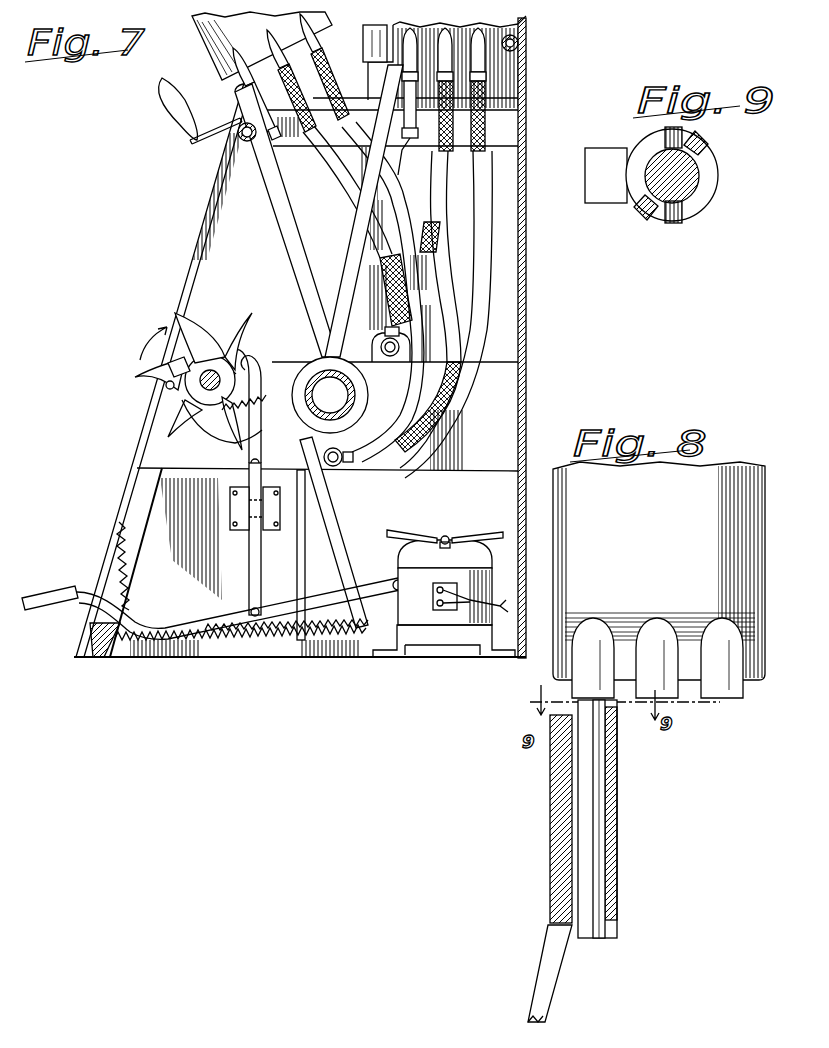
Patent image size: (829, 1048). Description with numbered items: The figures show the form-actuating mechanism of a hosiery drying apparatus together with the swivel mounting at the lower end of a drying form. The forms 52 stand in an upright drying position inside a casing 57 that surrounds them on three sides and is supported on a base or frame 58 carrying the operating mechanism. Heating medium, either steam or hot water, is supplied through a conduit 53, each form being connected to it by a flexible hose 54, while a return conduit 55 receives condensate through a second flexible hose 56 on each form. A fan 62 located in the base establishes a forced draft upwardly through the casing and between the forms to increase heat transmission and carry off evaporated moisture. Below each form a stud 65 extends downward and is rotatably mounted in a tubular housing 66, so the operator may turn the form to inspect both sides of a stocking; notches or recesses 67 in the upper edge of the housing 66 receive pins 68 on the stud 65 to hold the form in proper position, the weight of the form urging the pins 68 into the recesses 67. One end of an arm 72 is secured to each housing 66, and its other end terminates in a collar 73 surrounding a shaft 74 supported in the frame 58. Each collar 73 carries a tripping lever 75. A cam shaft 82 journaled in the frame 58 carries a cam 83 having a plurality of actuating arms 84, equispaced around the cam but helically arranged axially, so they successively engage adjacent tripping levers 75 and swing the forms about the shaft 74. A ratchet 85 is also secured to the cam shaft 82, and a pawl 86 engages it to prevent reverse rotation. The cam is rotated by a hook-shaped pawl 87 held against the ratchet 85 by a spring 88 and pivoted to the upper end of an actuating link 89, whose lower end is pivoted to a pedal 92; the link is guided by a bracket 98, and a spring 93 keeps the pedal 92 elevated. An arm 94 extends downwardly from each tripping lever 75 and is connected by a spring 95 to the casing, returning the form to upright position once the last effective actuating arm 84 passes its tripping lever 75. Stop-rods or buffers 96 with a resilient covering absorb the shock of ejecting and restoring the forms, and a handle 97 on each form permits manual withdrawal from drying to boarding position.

In FIG. 7, the forms 52 is at (208, 43).
In FIG. 8, the forms 52 is at (766, 578).
In FIG. 7, the conduit 53 is at (383, 338).
In FIG. 7, the flexible hose 54 is at (443, 217).
In FIG. 7, the return conduit 55 is at (340, 468).
In FIG. 7, the flexible hose 56 is at (435, 267).
In FIG. 7, the casing 57 is at (530, 58).
In FIG. 7, the base or frame 58 is at (196, 250).
In FIG. 7, the fan 62 is at (462, 532).
In FIG. 7, the stud 65 is at (283, 140).
In FIG. 8, the stud 65 is at (600, 742).
In FIG. 9, the stud 65 is at (690, 185).
In FIG. 8, the tubular housing 66 is at (618, 770).
In FIG. 9, the notches or recesses 67 is at (698, 142).
In FIG. 8, the pins 68 is at (600, 707).
In FIG. 9, the pins 68 is at (668, 128).
In FIG. 7, the arm 72 is at (290, 240).
In FIG. 8, the arm 72 is at (550, 792).
In FIG. 9, the arm 72 is at (608, 203).
In FIG. 7, the collar 73 is at (368, 375).
In FIG. 7, the shaft 74 is at (355, 393).
In FIG. 7, the tripping lever 75 is at (247, 456).
In FIG. 7, the cam shaft 82 is at (186, 412).
In FIG. 7, the cam 83 is at (150, 355).
In FIG. 7, the actuating arms 84 is at (208, 333).
In FIG. 7, the ratchet 85 is at (165, 395).
In FIG. 7, the pawl 86 is at (160, 380).
In FIG. 7, the hook-shaped pawl 87 is at (265, 355).
In FIG. 7, the spring 88 is at (212, 423).
In FIG. 7, the actuating link 89 is at (249, 551).
In FIG. 7, the pedal 92 is at (52, 590).
In FIG. 7, the spring 93 is at (129, 545).
In FIG. 7, the arm 94 is at (350, 507).
In FIG. 7, the spring 95 is at (345, 627).
In FIG. 7, the stop-rods or buffers 96 is at (235, 137).
In FIG. 7, the handle 97 is at (165, 98).
In FIG. 7, the bracket 98 is at (230, 500).